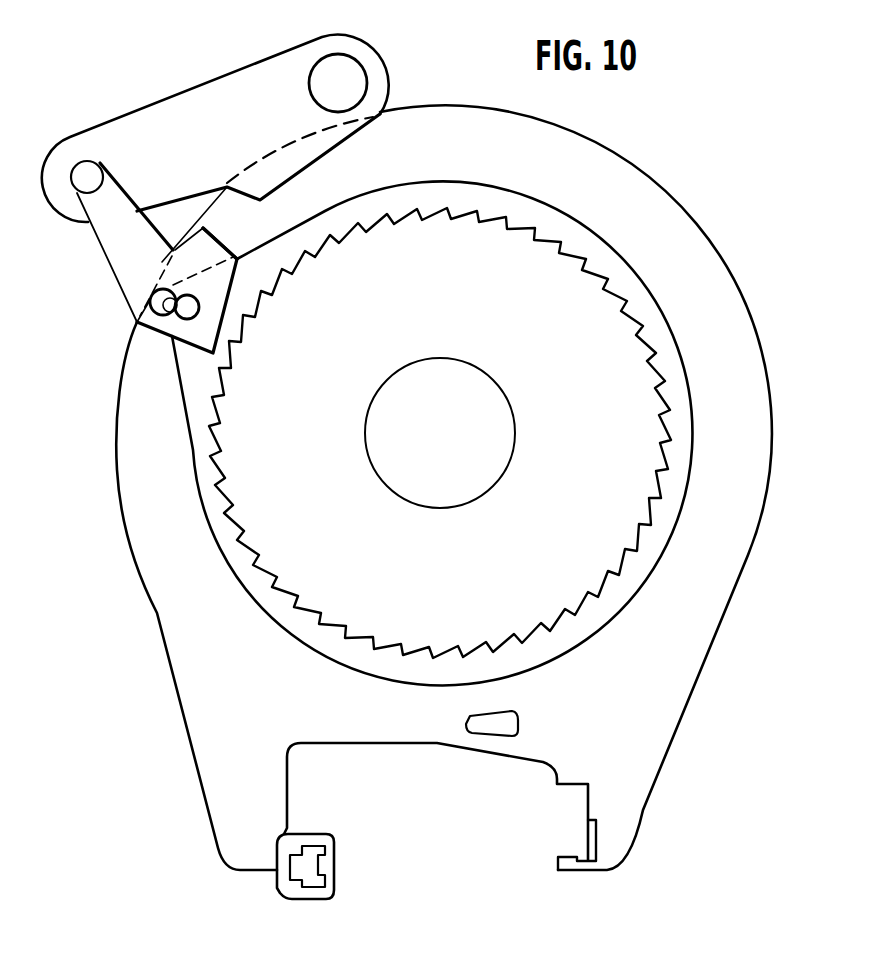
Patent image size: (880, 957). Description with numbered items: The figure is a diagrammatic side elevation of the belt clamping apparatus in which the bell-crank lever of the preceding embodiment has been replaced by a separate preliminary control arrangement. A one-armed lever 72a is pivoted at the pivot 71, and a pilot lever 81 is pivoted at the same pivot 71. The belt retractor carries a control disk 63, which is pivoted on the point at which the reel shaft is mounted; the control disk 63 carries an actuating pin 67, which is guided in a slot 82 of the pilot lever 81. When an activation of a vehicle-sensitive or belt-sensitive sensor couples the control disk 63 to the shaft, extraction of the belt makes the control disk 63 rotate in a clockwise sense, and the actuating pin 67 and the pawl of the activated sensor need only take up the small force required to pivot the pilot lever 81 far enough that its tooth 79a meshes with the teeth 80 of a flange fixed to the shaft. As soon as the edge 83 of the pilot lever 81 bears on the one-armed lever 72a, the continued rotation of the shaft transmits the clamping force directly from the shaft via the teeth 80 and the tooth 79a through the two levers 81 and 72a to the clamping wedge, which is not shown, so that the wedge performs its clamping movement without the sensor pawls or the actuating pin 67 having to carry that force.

The control disk 63 is at (683, 457).
The teeth 80 is at (613, 307).
The one-armed lever 72a is at (181, 126).
The pivot 71 is at (85, 173).
The pilot lever 81 is at (124, 238).
The tooth 79a is at (212, 353).
The edge 83 is at (229, 241).
The slot 82 is at (176, 312).
The actuating pin 67 is at (137, 322).